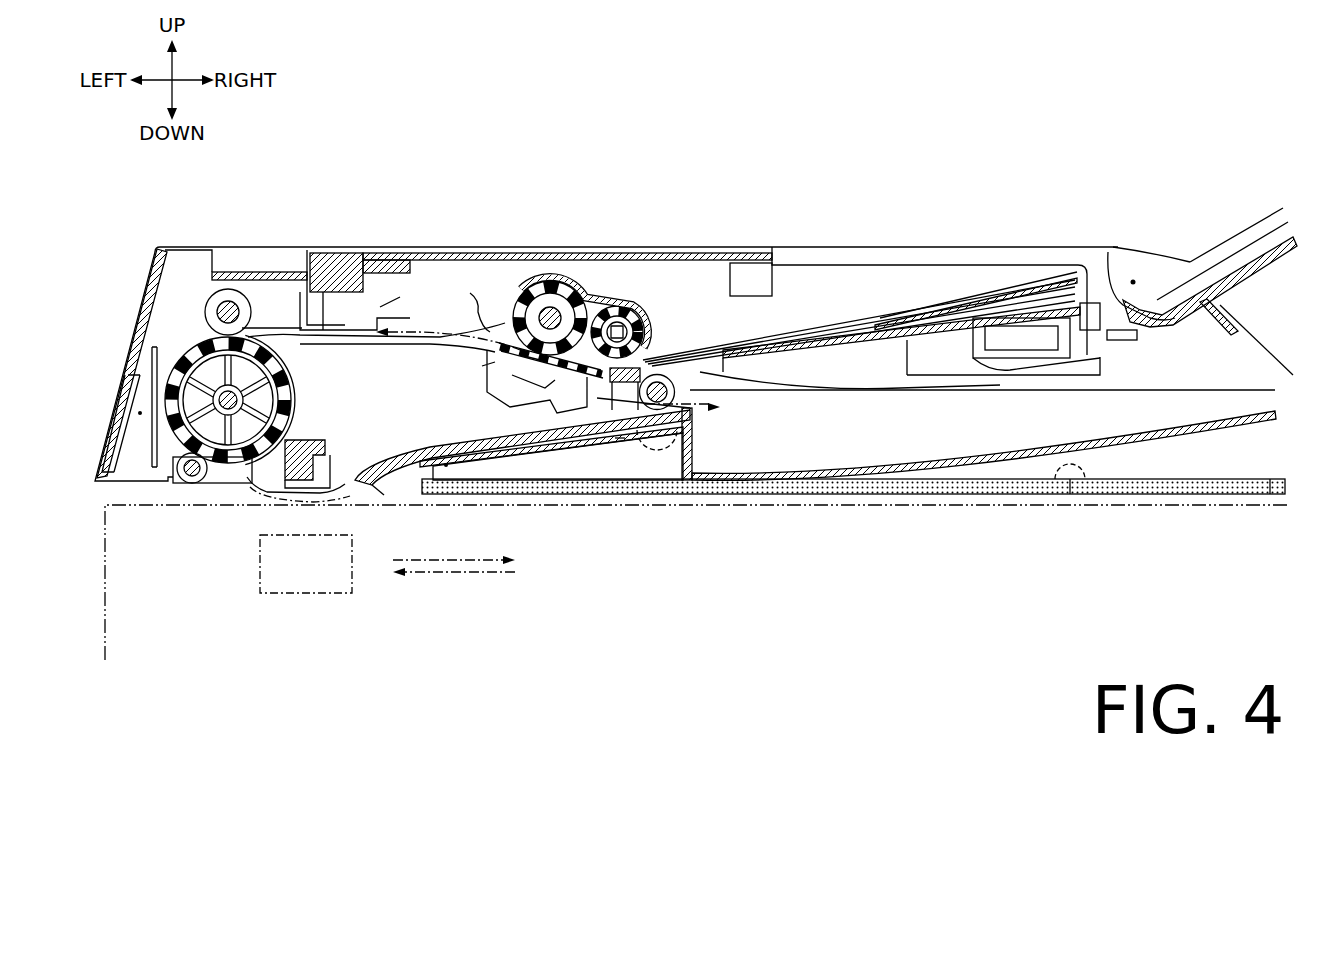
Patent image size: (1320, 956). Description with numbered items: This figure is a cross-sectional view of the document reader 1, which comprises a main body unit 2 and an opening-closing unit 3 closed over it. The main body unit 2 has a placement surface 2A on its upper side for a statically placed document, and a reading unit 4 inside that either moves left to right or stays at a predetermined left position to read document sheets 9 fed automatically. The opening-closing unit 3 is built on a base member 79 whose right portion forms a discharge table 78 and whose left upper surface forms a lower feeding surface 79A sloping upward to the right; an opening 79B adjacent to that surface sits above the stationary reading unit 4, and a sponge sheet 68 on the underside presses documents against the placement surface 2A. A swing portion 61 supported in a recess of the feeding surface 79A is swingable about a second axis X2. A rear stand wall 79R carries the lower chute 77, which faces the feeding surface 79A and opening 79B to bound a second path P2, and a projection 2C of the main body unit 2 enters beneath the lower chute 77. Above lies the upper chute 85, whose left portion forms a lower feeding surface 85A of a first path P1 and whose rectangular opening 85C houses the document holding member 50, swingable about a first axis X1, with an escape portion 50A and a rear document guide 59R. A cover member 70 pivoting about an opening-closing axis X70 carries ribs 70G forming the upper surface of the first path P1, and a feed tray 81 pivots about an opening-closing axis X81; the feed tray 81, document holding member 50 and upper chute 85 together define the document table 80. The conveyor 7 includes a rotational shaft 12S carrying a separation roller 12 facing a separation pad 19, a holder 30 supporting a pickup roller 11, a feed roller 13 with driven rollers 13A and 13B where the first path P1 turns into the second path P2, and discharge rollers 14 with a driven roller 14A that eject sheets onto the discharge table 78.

The document reader 1 is at (339, 97).
The main body unit 2 is at (105, 610).
The placement surface 2A is at (1068, 465).
The projection 2C is at (380, 495).
The opening-closing unit 3 is at (152, 247).
The reading unit 4 is at (305, 580).
The conveyor 7 is at (672, 276).
The document sheets 9 is at (1037, 280).
The pickup roller 11 is at (617, 317).
The separation roller 12 is at (547, 310).
The rotational shaft 12S is at (580, 298).
The feed roller 13 is at (288, 400).
The driven roller 13A is at (213, 312).
The driven roller 13B is at (192, 485).
The discharge rollers 14 is at (690, 428).
The driven roller 14A is at (690, 398).
The separation pad 19 is at (505, 382).
The holder 30 is at (578, 287).
The document holding member 50 is at (920, 395).
The escape portion 50A is at (740, 385).
The document guide 59R is at (975, 285).
The swing portion 61 is at (595, 456).
The sponge sheet 68 is at (1215, 493).
The cover member 70 is at (385, 258).
The ribs 70G is at (413, 258).
The lower chute 77 is at (395, 460).
The discharge table 78 is at (1105, 435).
The base member 79 is at (125, 428).
The lower feeding surface 79A is at (516, 435).
The opening 79B is at (400, 485).
The stand wall 79R is at (813, 255).
The document table 80 is at (863, 329).
The feed tray 81 is at (1240, 283).
The upper chute 85 is at (353, 347).
The lower feeding surface 85A is at (310, 332).
The rectangular opening 85C is at (1103, 305).
The first path P1 is at (466, 258).
The second path P2 is at (270, 497).
The first axis X1 is at (620, 440).
The second axis X2 is at (446, 465).
The opening-closing axis X70 is at (140, 413).
The opening-closing axis X81 is at (1135, 280).